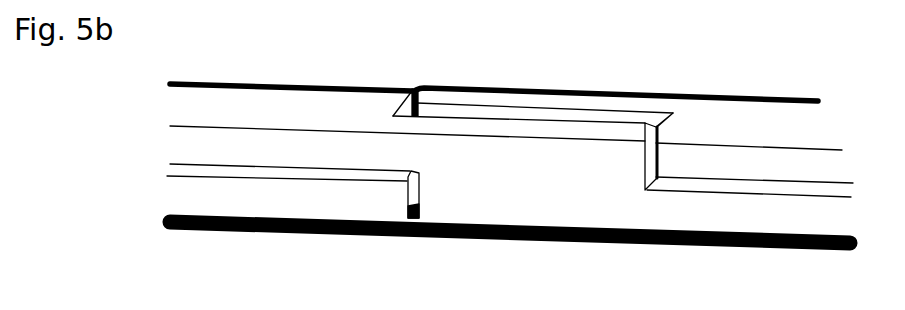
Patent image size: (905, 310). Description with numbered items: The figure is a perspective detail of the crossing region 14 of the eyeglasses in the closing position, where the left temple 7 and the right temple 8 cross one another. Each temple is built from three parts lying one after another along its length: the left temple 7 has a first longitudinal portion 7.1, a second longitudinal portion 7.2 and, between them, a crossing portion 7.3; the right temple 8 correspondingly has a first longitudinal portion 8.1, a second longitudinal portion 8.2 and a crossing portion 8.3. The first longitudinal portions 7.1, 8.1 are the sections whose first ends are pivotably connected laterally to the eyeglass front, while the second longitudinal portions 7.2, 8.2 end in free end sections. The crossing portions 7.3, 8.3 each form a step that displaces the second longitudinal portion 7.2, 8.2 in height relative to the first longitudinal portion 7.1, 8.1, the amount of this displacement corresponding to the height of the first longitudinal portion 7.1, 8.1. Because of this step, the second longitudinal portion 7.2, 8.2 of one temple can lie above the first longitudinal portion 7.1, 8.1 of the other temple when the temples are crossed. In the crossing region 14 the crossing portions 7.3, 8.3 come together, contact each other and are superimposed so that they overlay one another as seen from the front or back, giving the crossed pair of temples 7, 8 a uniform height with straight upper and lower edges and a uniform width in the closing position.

The left temple 7 is at (805, 223).
The first longitudinal portion of the left temple 7.1 is at (715, 218).
The second longitudinal portion of the left temple 7.2 is at (323, 112).
The crossing portion of the left temple 7.3 is at (527, 177).
The right temple 8 is at (240, 200).
The first longitudinal portion of the right temple 8.1 is at (360, 203).
The second longitudinal portion of the right temple 8.2 is at (723, 125).
The crossing portion of the right temple 8.3 is at (533, 100).
The crossing region 14 is at (567, 89).